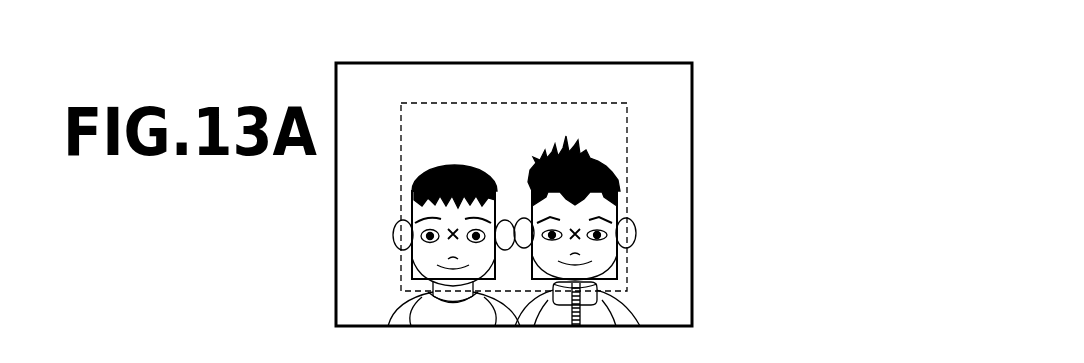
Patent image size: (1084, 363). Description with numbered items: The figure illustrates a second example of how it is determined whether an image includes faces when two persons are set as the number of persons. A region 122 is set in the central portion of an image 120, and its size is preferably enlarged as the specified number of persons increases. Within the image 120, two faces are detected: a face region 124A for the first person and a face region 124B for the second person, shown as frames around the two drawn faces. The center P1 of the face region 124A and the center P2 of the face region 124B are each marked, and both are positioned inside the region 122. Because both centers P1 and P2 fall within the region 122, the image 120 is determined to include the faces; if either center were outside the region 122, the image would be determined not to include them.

The image 120 is at (692, 82).
The region 122 is at (627, 150).
The face region 124A is at (410, 262).
The face region 124B is at (617, 272).
The center of face region P1 is at (381, 177).
The center of face region P2 is at (650, 177).